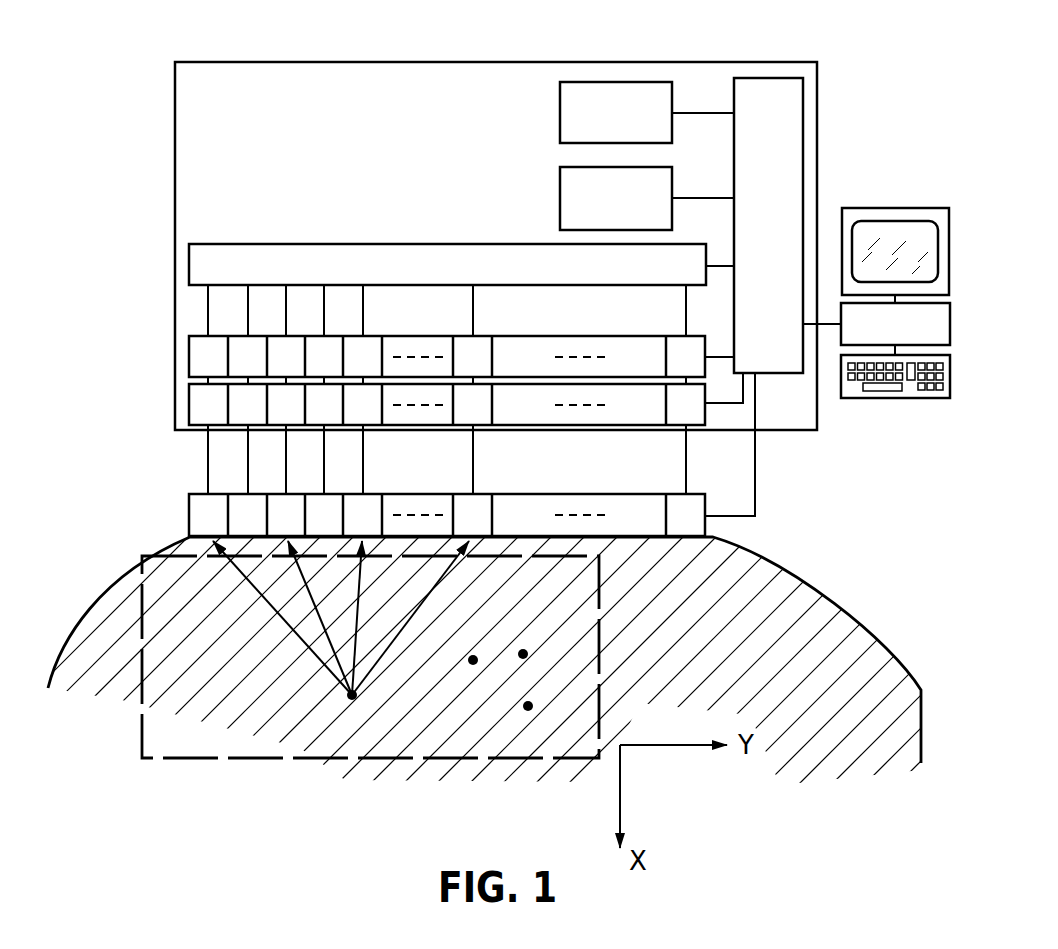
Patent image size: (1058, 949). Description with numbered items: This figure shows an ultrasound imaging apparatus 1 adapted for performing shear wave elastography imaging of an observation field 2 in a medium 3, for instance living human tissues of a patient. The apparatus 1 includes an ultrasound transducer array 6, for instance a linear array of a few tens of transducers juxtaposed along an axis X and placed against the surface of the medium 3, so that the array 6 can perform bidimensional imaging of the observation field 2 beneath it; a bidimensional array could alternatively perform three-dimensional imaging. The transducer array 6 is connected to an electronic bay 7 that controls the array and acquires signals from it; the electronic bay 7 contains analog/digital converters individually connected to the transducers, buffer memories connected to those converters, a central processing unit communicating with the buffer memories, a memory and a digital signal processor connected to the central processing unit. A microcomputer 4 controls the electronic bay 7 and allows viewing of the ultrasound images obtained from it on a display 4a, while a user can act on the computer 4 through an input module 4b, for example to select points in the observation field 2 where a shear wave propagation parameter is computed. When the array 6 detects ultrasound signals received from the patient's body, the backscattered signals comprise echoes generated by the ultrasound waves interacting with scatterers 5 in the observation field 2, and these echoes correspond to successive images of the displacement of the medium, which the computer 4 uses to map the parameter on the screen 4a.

The apparatus 1 is at (843, 125).
The observation field 2 is at (140, 577).
The medium 3 is at (165, 537).
The microcomputer 4 is at (887, 337).
The display 4a is at (926, 207).
The input module 4b is at (927, 398).
The scatterers 5 is at (519, 662).
The ultrasound transducer array 6 is at (189, 495).
The electronic bay 7 is at (247, 62).